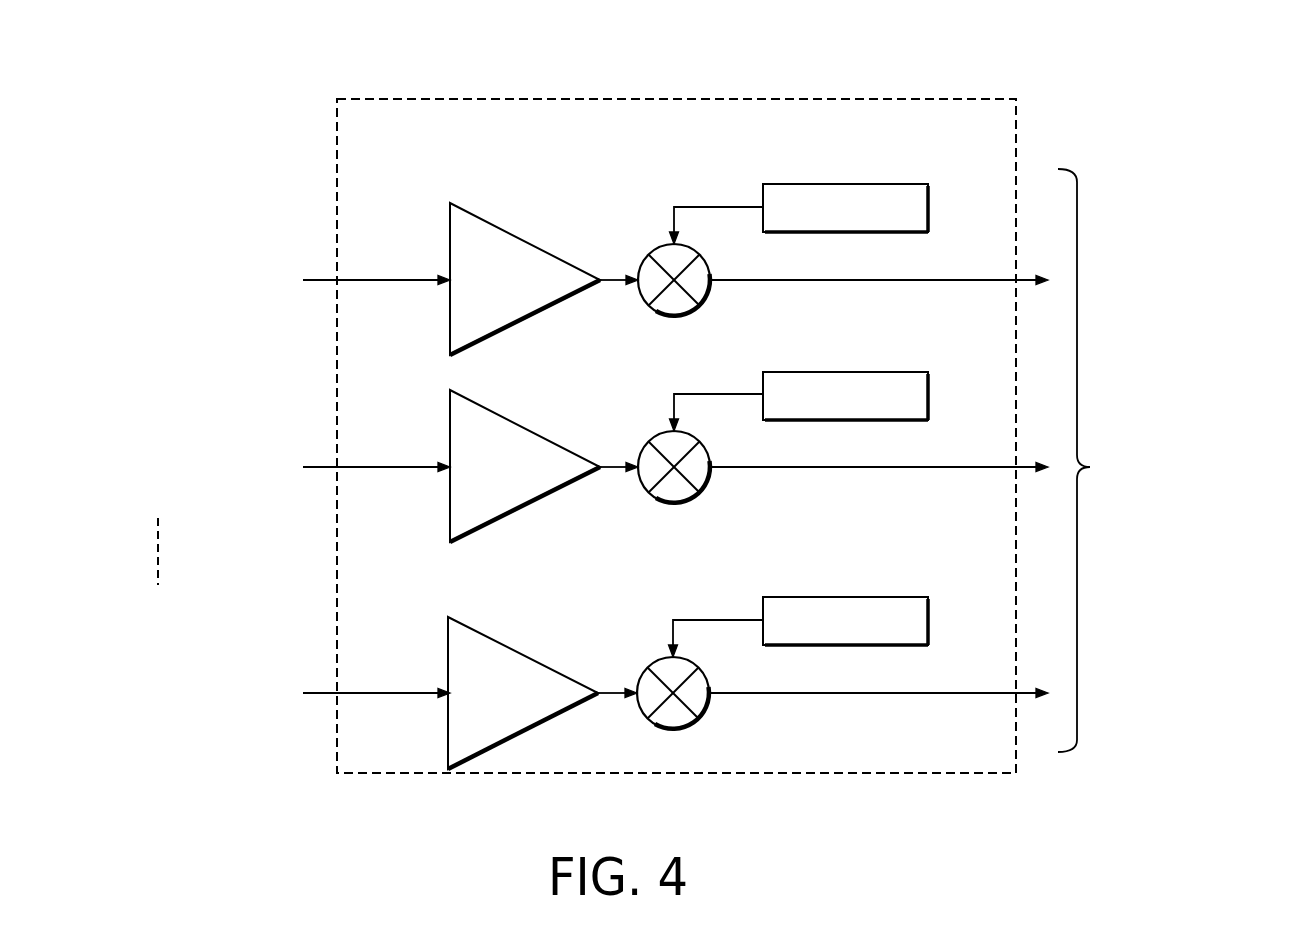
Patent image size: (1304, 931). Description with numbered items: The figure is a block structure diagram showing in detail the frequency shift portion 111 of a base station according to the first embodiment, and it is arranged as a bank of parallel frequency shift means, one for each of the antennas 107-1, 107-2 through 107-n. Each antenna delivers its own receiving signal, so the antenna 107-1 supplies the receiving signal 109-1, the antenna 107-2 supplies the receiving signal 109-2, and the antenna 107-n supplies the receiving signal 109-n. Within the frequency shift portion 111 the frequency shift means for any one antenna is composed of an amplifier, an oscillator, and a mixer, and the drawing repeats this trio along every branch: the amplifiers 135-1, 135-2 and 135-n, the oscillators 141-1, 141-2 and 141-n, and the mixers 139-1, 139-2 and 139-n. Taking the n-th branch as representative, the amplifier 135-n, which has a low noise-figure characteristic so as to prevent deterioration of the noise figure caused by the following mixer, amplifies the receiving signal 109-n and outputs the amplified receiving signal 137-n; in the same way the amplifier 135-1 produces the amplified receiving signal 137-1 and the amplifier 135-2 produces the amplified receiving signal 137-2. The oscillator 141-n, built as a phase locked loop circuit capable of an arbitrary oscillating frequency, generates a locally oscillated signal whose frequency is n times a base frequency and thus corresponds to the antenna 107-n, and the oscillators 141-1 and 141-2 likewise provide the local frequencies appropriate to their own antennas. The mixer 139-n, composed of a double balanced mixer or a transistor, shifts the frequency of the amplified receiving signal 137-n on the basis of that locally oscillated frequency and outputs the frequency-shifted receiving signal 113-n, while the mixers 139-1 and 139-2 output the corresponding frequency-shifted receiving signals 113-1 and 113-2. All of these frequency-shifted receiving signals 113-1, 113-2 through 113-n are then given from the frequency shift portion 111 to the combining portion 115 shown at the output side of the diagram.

The frequency shift portion 111 is at (462, 98).
The antenna 107-1 is at (234, 280).
The antenna 107-2 is at (234, 467).
The antenna 107-n is at (234, 693).
The receiving signal 109-1 is at (392, 276).
The receiving signal 109-2 is at (392, 463).
The receiving signal 109-n is at (392, 689).
The amplifier 135-1 is at (505, 230).
The amplifier 135-2 is at (512, 420).
The amplifier 135-n is at (488, 637).
The amplified receiving signal 137-1 is at (612, 274).
The amplified receiving signal 137-2 is at (614, 463).
The amplified receiving signal 137-n is at (600, 689).
The mixer 139-1 is at (661, 243).
The mixer 139-2 is at (661, 430).
The mixer 139-n is at (661, 656).
The oscillator 141-1 is at (838, 183).
The oscillator 141-2 is at (838, 371).
The oscillator 141-n is at (838, 596).
The receiving signal 113-1 is at (978, 277).
The receiving signal 113-2 is at (978, 464).
The receiving signal 113-n is at (978, 690).
The combining portion 115 is at (1156, 460).